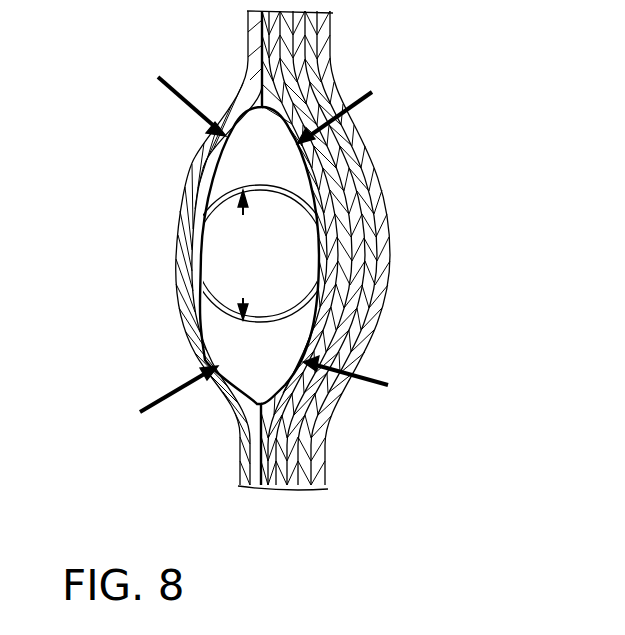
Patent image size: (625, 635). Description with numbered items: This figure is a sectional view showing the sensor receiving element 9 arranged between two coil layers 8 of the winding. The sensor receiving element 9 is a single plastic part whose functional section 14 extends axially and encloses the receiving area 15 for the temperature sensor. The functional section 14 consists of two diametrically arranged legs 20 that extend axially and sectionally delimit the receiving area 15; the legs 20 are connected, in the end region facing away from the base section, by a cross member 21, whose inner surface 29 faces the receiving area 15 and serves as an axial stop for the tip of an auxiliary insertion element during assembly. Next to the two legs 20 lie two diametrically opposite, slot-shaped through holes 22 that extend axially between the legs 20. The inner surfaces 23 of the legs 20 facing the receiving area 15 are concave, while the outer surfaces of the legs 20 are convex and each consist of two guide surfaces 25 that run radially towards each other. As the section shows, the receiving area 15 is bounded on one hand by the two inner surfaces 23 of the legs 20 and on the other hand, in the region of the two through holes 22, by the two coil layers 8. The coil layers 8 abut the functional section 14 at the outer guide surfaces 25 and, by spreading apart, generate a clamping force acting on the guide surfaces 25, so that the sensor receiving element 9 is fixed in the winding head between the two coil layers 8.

The coil layers 8 is at (200, 157).
The sensor receiving element 9 is at (195, 193).
The functional section 14 is at (305, 188).
The receiving area 15 is at (257, 262).
The legs 20 is at (262, 157).
The cross member 21 is at (305, 242).
The through holes 22 is at (202, 257).
The inner surfaces 23 is at (245, 215).
The guide surfaces 25 is at (237, 124).
The inner surface 29 is at (228, 227).